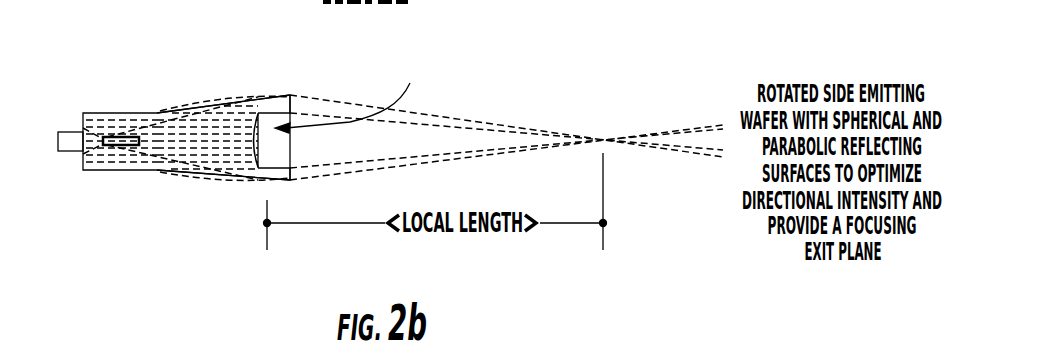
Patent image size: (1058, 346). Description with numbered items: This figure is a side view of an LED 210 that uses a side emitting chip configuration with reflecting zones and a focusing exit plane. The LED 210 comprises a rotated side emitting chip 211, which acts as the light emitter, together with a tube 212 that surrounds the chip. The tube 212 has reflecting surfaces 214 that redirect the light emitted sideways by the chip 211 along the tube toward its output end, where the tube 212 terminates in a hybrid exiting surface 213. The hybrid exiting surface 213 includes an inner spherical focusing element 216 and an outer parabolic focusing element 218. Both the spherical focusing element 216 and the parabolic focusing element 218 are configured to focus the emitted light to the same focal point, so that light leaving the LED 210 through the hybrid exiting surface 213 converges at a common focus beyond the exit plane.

The LED 210 is at (105, 0).
The rotated side emitting chip 211 is at (124, 146).
The tube 212 is at (205, 100).
The hybrid exiting surface 213 is at (351, 91).
The reflecting surfaces 214 is at (256, 97).
The inner spherical focusing element 216 is at (264, 147).
The outer parabolic focusing element 218 is at (292, 98).